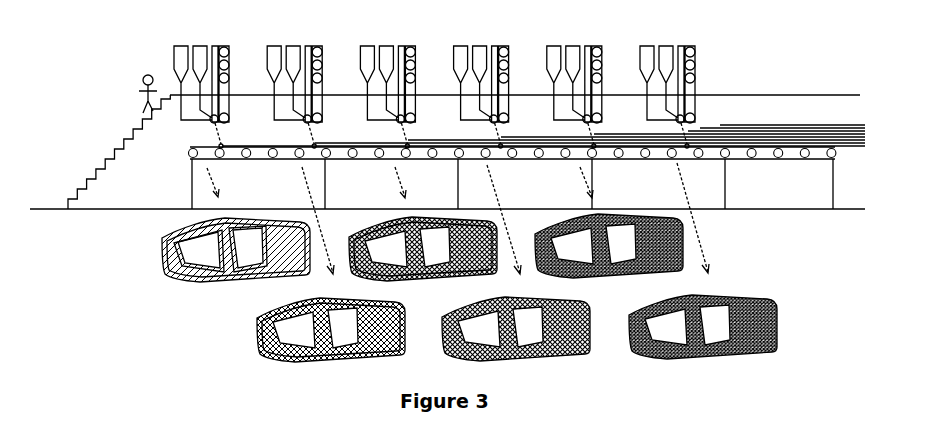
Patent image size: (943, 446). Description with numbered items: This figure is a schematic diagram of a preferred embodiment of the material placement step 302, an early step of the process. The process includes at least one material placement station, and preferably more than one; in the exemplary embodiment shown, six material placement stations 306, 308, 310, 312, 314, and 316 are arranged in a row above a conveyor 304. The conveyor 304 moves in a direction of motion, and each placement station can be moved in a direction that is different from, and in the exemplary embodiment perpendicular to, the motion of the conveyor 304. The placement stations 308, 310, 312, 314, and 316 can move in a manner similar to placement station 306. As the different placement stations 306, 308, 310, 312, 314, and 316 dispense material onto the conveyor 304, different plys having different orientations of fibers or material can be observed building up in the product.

The material placement step 302 is at (57, 293).
The conveyor 304 is at (742, 158).
The material placement station 306 is at (197, 84).
The material placement station 308 is at (294, 84).
The material placement station 310 is at (387, 84).
The material placement station 312 is at (481, 84).
The material placement station 314 is at (574, 84).
The material placement station 316 is at (667, 84).